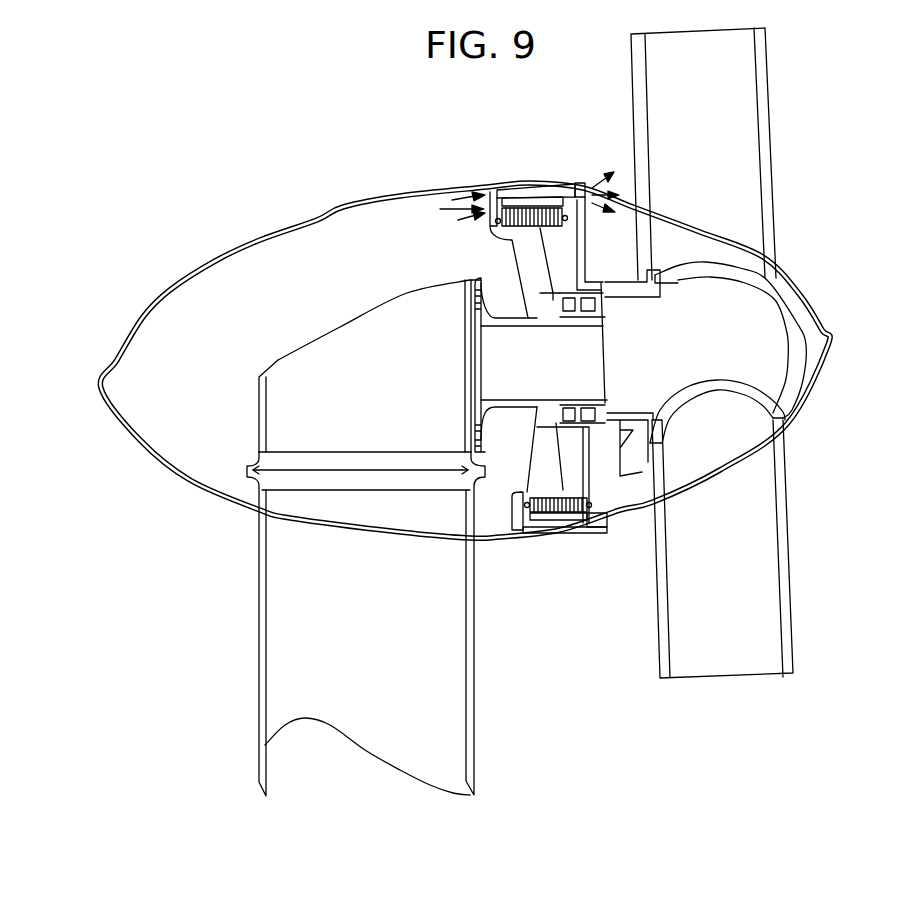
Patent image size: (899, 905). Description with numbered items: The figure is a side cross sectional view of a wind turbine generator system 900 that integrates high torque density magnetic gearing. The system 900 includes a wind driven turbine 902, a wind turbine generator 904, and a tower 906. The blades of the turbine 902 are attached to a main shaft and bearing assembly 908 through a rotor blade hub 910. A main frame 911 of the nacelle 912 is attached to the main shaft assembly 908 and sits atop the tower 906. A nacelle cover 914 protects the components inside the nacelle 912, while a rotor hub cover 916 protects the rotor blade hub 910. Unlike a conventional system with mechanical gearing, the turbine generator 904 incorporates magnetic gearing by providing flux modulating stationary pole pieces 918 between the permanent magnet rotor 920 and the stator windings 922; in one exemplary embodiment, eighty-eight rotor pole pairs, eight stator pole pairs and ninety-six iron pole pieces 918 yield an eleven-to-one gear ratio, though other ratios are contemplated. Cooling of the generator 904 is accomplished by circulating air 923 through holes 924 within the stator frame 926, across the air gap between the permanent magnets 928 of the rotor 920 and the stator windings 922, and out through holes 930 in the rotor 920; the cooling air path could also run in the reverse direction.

The wind turbine generator system 900 is at (133, 221).
The wind driven turbine 902 is at (777, 141).
The wind turbine generator 904 is at (508, 136).
The tower 906 is at (256, 616).
The main shaft and bearing assembly 908 is at (569, 368).
The rotor blade hub 910 is at (782, 334).
The main frame 911 is at (281, 358).
The nacelle 912 is at (380, 176).
The nacelle cover 914 is at (220, 258).
The rotor hub cover 916 is at (800, 281).
The flux modulating stationary pole pieces 918 is at (575, 186).
The permanent magnet rotor 920 is at (540, 186).
The stator windings 922 is at (589, 522).
The air 923 is at (427, 236).
The holes 924 is at (494, 192).
The stator frame 926 is at (530, 442).
The permanent magnets 928 is at (553, 530).
The holes 930 is at (583, 238).